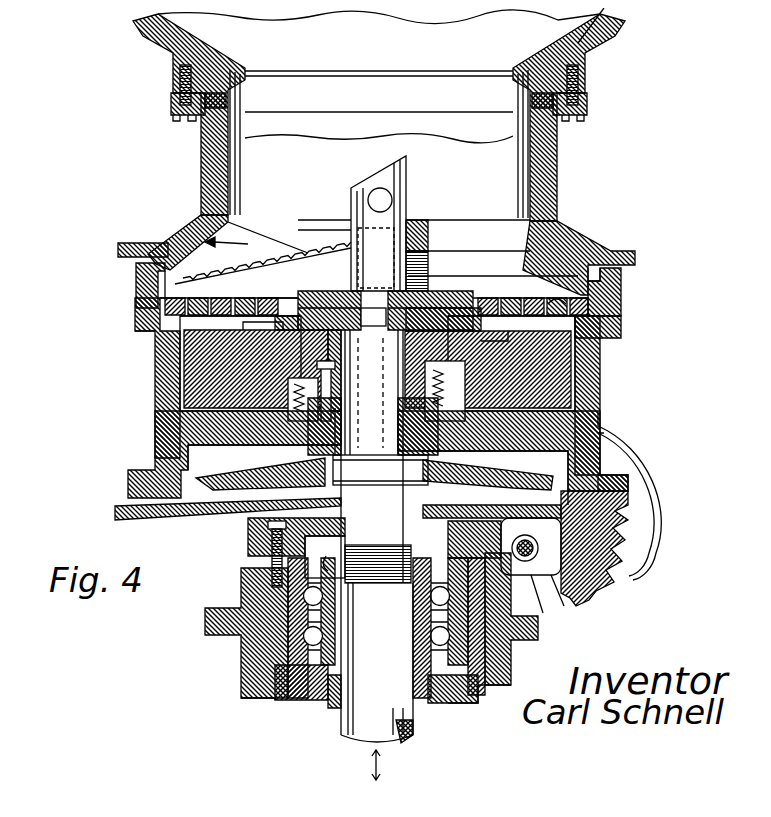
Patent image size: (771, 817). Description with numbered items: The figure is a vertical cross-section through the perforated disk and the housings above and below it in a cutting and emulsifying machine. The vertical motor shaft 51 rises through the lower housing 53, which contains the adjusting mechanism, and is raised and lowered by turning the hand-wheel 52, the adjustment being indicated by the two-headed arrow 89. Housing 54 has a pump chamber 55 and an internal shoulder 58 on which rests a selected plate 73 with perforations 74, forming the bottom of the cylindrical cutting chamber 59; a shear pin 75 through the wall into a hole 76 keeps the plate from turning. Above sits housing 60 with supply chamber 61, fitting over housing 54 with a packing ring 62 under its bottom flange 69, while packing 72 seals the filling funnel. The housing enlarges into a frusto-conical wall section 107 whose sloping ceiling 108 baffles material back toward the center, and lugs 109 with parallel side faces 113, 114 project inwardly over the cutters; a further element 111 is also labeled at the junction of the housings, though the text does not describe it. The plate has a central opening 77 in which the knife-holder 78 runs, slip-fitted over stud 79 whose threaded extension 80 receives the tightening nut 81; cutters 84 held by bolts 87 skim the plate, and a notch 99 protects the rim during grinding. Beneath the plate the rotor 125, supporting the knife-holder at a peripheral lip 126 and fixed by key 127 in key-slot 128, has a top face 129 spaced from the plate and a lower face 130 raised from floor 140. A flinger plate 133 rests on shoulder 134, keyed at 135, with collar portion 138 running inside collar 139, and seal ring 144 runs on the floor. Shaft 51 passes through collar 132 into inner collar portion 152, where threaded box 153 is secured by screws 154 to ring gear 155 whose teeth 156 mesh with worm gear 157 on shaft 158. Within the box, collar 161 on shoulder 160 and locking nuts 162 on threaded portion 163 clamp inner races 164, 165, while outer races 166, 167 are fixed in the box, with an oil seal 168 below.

The motor shaft 51 is at (340, 718).
The hand-wheel 52 is at (603, 440).
The housing 53 is at (163, 505).
The housing 54 is at (150, 364).
The pump chamber 55 is at (185, 404).
The internal shoulder 58 is at (145, 322).
The cutting chamber 59 is at (509, 278).
The housing 60 is at (574, 124).
The supply chamber 61 is at (450, 169).
The packing ring 62 is at (128, 258).
The bottom flange 69 is at (110, 240).
The packing 72 is at (200, 108).
The plate 73 is at (472, 292).
The perforations 74 is at (547, 294).
The shear pin 75 is at (612, 300).
The hole 76 is at (613, 319).
The central opening 77 is at (428, 287).
The knife-holder 78 is at (425, 283).
The stud 79 is at (373, 317).
The threaded extension 80 is at (399, 207).
The tightening nut 81 is at (370, 178).
The cutter 84 is at (275, 236).
The bolts 87 is at (315, 243).
The two-headed arrow 89 is at (365, 752).
The notch 99 is at (262, 290).
The frusto-conical wall section 107 is at (175, 216).
The sloping ceiling 108 is at (240, 235).
The lugs 109 is at (405, 220).
The channel 111 is at (155, 277).
The side face 113 is at (420, 224).
The side face 114 is at (343, 222).
The rotor 125 is at (548, 360).
The peripheral lip 126 is at (272, 329).
The key 127 is at (340, 383).
The key-slot 128 is at (385, 412).
The top face 129 is at (515, 325).
The lower face 130 is at (263, 453).
The collar 132 is at (322, 463).
The flinger plate 133 is at (498, 448).
The shoulder 134 is at (358, 452).
The key 135 is at (343, 418).
The collar portion 138 is at (440, 428).
The collar 139 is at (437, 367).
The floor 140 is at (575, 407).
The ring 144 is at (296, 449).
The inner collar portion 152 is at (233, 671).
The threaded box 153 is at (248, 694).
The screws 154 is at (258, 515).
The ring gear 155 is at (447, 514).
The teeth 156 is at (240, 531).
The worm gear 157 is at (540, 570).
The shaft 158 is at (516, 553).
The shoulder 160 is at (355, 703).
The collar 161 is at (412, 706).
The locking nuts 162 is at (325, 557).
The threaded portion 163 is at (352, 555).
The inner race 164 is at (316, 591).
The inner race 165 is at (320, 630).
The outer race 166 is at (262, 590).
The outer race 167 is at (282, 634).
The oil seal 168 is at (280, 698).